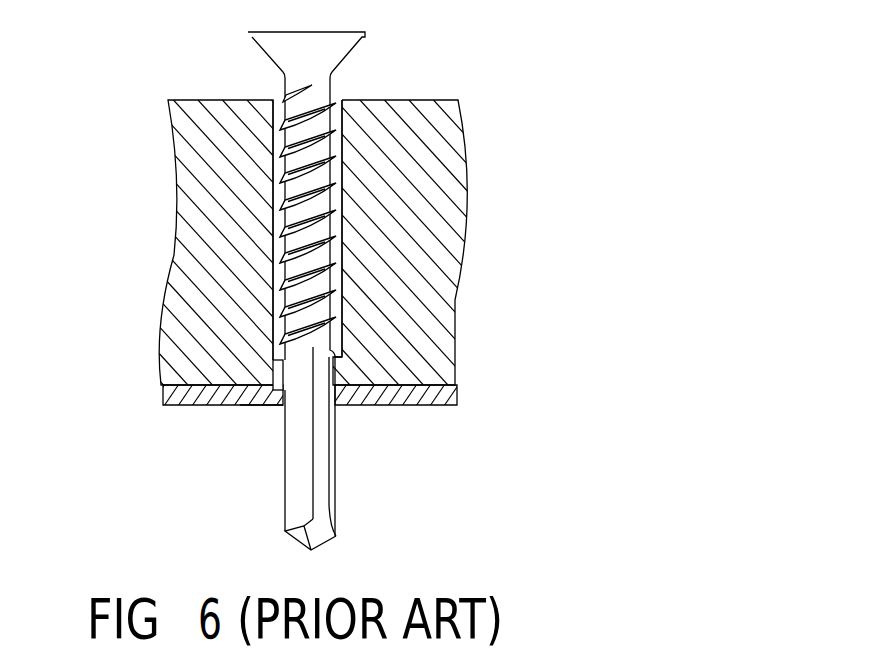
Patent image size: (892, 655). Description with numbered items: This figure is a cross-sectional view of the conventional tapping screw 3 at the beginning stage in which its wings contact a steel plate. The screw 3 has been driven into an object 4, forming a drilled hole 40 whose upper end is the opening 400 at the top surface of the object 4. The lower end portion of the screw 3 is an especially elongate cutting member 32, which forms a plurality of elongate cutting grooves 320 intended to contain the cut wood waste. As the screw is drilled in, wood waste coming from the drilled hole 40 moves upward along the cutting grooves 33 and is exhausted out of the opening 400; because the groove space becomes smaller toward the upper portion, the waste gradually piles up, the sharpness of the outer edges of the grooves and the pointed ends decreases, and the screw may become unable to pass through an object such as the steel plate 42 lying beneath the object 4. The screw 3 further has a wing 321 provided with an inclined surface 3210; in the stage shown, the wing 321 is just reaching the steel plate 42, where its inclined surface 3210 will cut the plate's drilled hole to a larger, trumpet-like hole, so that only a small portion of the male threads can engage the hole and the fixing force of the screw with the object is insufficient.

The self-drilling screw 3 is at (256, 88).
The workpiece 4 is at (443, 268).
The drilled hole 40 is at (343, 167).
The opening of the drilled hole 400 is at (343, 100).
The steel plate 42 is at (203, 405).
The cutting member 32 is at (293, 480).
The cutting grooves 320 is at (346, 478).
The wing 321 is at (276, 375).
The inclined surface 3210 is at (263, 407).
The cutting grooves 33 is at (311, 550).